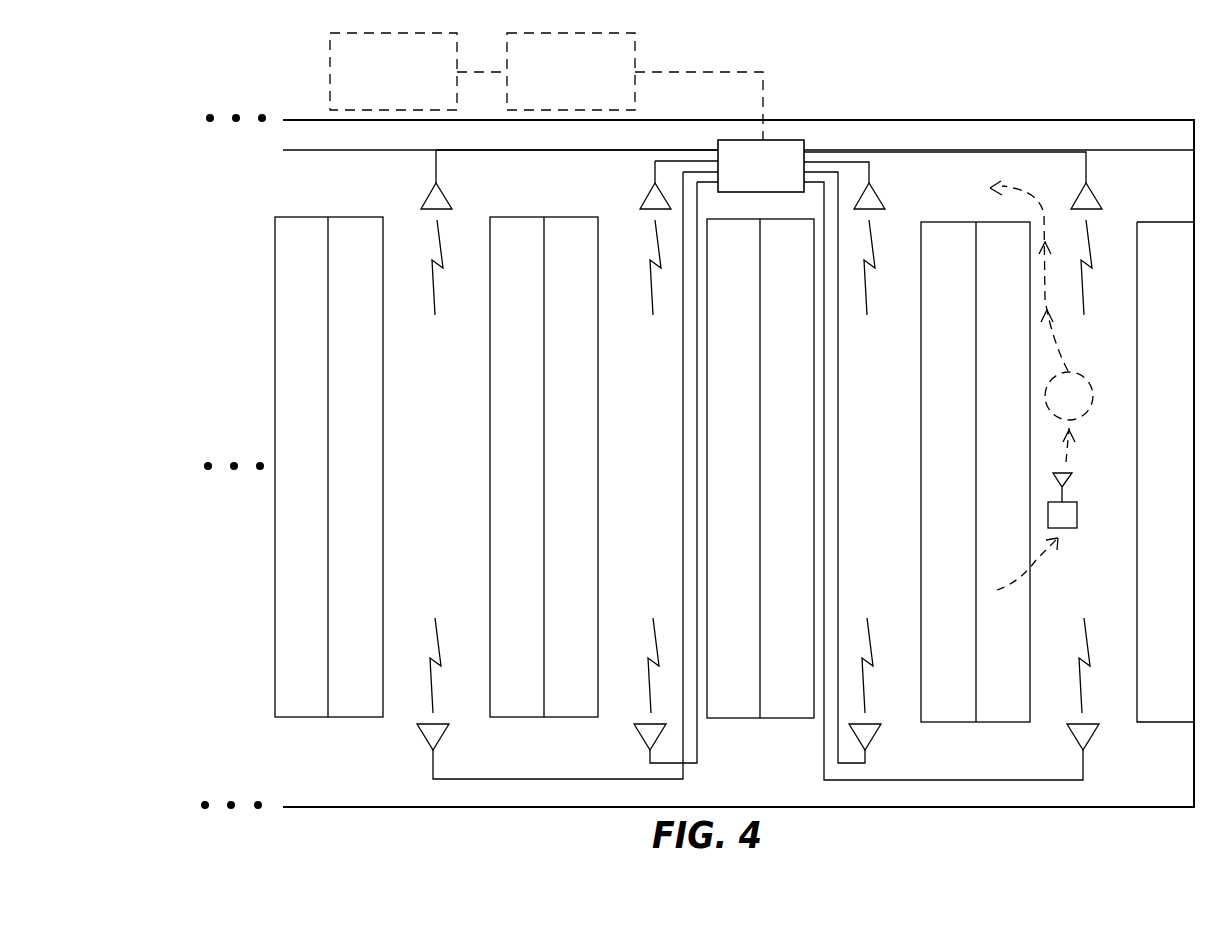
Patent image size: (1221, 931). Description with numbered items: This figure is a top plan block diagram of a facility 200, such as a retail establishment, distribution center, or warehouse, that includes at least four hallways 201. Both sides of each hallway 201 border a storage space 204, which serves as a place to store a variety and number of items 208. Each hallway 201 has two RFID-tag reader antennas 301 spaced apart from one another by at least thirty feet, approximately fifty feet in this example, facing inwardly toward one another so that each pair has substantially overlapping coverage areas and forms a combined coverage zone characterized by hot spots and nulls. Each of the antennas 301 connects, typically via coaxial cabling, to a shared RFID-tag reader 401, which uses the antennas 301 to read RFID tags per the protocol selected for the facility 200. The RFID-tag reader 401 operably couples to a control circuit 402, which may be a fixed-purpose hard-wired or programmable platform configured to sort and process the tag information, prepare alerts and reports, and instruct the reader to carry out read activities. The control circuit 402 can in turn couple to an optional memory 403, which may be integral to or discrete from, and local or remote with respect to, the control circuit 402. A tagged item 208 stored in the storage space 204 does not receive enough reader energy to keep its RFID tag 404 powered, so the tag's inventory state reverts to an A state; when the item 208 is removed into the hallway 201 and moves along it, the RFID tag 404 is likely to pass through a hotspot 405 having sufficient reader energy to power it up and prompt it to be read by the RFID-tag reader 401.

The facility 200 is at (853, 121).
The hallway 201 is at (451, 448).
The storage space 204 is at (318, 318).
The item 208 is at (1064, 517).
The RFID-tag reader antenna 301 is at (446, 199).
The RFID-tag reader 401 is at (762, 193).
The control circuit 402 is at (532, 33).
The memory 403 is at (358, 33).
The RFID tag 404 is at (1068, 481).
The hotspot 405 is at (1085, 385).